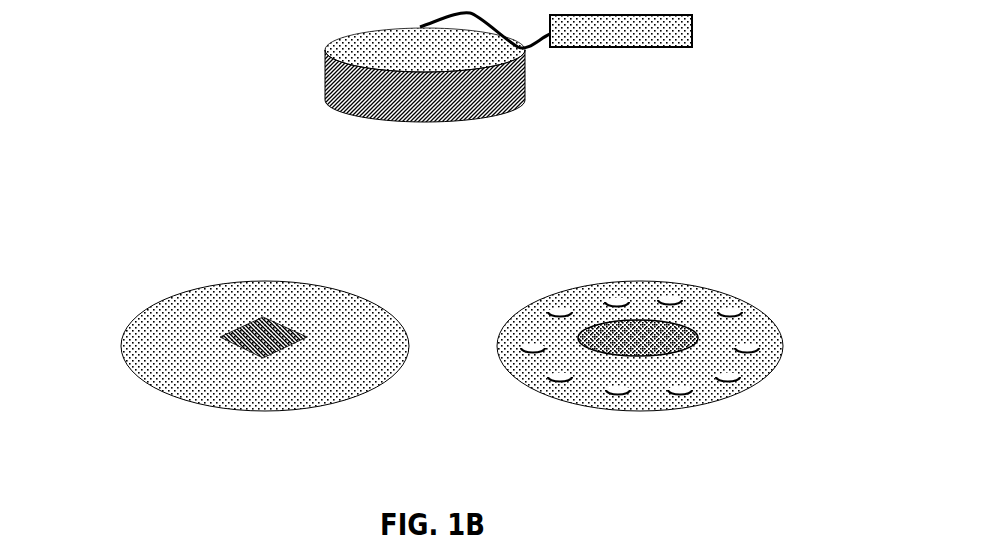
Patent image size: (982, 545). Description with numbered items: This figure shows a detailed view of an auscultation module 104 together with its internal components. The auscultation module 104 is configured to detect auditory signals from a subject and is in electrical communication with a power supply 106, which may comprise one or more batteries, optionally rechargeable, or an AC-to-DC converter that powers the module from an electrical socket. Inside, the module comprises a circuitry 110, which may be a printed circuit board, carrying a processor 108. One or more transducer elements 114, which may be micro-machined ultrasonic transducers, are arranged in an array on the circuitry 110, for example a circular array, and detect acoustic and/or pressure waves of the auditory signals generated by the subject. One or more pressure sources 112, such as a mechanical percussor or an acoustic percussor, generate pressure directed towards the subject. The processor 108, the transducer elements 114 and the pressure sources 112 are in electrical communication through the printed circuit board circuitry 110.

The auscultation module 104 is at (355, 40).
The power supply 106 is at (680, 28).
The processor 108 is at (249, 308).
The circuitry 110 is at (292, 277).
The pressure source 112 is at (607, 313).
The transducer element 114 is at (625, 287).